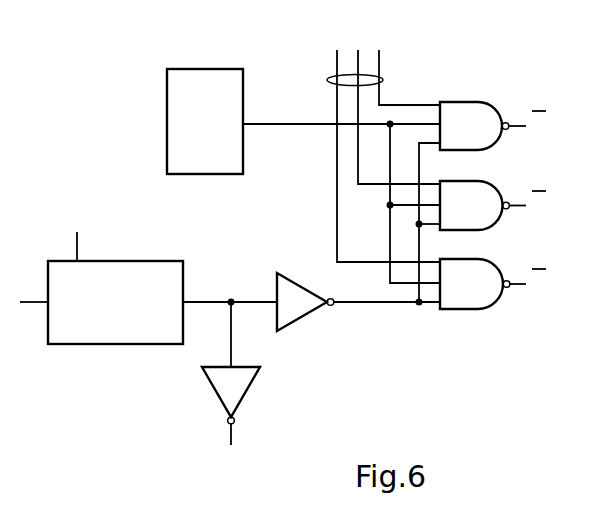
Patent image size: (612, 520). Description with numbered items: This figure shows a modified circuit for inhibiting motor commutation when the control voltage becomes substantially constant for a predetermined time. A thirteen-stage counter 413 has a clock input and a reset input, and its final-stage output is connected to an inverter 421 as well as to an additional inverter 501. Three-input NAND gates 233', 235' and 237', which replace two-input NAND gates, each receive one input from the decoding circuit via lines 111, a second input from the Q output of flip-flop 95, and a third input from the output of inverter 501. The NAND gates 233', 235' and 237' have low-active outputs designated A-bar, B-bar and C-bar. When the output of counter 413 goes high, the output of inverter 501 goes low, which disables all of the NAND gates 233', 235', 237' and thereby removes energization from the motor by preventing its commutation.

The flip-flop 95 is at (198, 68).
The lines 111 is at (383, 80).
The 3-input NAND gate 233' is at (493, 112).
The 3-input NAND gate 235' is at (493, 191).
The 3-input NAND gate 237' is at (493, 270).
The 13-stage counter 413 is at (111, 345).
The inverter 501 is at (298, 319).
The inverter 421 is at (252, 392).